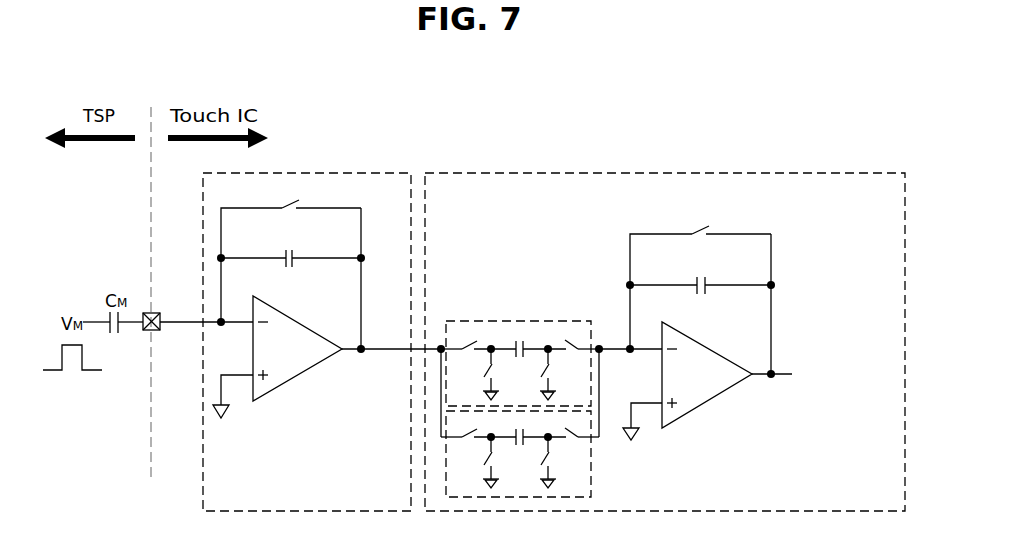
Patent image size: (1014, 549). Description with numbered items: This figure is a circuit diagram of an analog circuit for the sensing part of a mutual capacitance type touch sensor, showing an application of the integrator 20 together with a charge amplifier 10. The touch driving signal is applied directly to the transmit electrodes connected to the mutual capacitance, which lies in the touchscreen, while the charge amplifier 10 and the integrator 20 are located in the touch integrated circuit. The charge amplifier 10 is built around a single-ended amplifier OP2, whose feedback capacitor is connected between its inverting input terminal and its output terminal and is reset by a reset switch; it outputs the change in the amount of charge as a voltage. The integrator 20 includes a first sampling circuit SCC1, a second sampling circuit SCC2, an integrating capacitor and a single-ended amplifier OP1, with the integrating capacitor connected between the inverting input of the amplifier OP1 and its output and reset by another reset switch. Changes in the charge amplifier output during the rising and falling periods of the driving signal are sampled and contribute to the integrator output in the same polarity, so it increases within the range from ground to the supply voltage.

The charge amplifier 10 is at (307, 172).
The integrator 20 is at (665, 172).
The single-ended amplifier OP1 is at (708, 403).
The single-ended amplifier OP2 is at (298, 375).
The first sampling circuit SCC1 is at (520, 352).
The second sampling circuit SCC2 is at (520, 471).